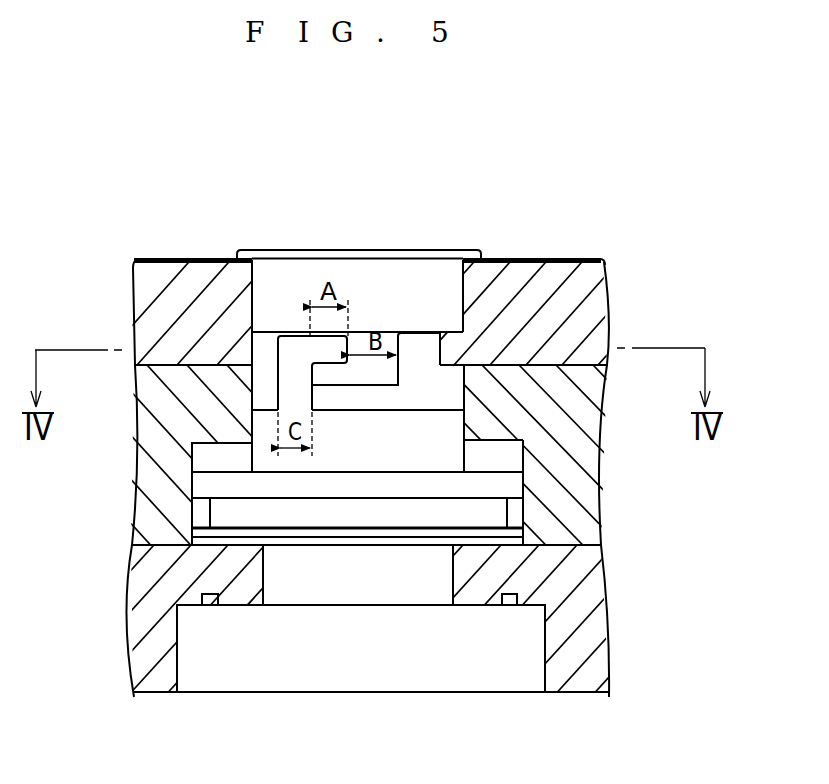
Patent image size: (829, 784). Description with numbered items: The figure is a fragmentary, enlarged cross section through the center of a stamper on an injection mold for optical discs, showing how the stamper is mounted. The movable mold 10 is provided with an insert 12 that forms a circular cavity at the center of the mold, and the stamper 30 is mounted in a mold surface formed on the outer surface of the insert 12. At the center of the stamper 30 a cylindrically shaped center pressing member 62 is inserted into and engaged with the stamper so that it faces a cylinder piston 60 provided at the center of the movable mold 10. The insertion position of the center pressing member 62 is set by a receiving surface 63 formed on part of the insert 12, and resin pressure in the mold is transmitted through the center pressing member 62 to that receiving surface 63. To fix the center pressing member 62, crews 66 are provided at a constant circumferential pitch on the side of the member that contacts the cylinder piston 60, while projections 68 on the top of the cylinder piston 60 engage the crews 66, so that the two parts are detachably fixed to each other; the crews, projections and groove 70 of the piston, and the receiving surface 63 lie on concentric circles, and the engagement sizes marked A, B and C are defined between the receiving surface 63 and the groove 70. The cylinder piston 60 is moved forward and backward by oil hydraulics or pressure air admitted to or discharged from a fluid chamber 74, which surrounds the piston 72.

The movable mold 10 is at (572, 699).
The insert 12 is at (557, 303).
The stamper 30 is at (562, 259).
The cylinder piston 60 is at (347, 448).
The center pressing member 62 is at (387, 282).
The receiving surface 63 is at (447, 350).
The crews 66 is at (327, 378).
The projections 68 is at (337, 348).
The groove 70 is at (437, 393).
The piston 72 is at (207, 486).
The fluid chamber 74 is at (207, 455).